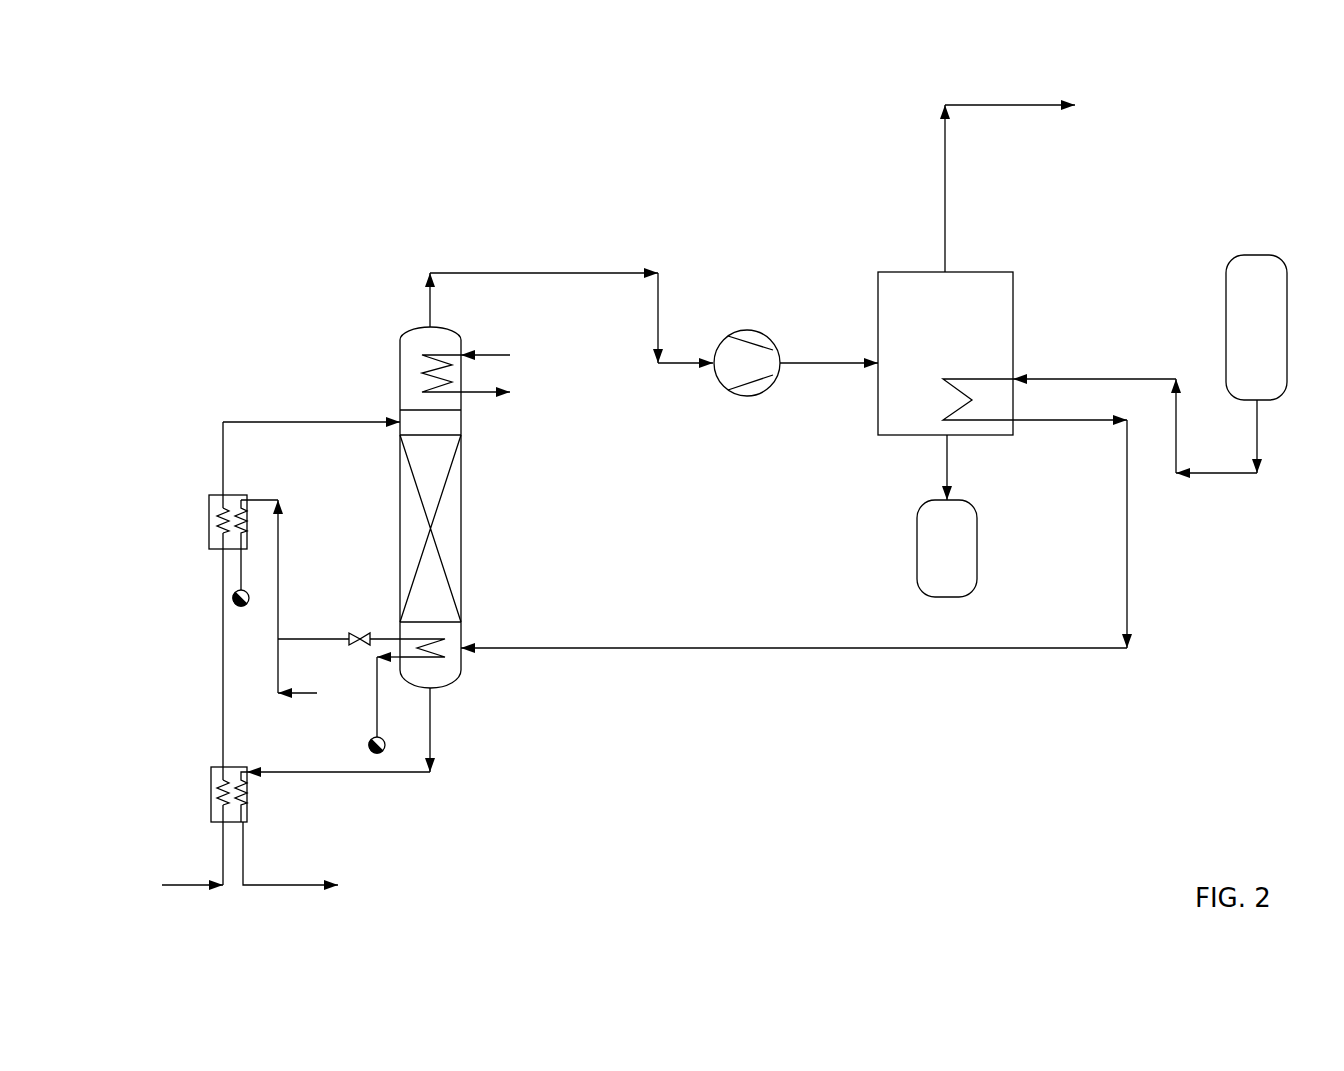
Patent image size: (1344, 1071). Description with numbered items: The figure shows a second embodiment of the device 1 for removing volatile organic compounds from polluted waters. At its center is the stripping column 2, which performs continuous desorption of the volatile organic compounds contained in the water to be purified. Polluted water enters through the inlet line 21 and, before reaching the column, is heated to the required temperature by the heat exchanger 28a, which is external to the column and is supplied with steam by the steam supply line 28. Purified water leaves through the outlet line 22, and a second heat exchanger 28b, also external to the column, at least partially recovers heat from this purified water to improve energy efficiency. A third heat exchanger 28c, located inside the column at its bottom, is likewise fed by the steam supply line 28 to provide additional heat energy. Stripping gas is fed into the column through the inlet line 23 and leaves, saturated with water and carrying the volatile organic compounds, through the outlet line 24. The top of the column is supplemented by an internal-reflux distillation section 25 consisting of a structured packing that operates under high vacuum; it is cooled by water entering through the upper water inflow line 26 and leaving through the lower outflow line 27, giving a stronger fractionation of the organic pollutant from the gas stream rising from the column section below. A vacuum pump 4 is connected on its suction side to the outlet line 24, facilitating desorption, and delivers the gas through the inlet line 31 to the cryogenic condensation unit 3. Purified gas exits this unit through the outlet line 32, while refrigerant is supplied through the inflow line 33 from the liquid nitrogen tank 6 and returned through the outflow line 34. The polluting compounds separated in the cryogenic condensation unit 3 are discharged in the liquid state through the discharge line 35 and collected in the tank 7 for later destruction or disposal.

The device 1 is at (216, 178).
The stripping column 2 is at (468, 501).
The cryogenic condensation unit 3 is at (1020, 303).
The vacuum pump 4 is at (742, 320).
The liquid nitrogen tank 6 is at (1295, 327).
The tank 7 is at (912, 548).
The inlet line 21 is at (237, 417).
The outlet line 22 is at (302, 880).
The inlet line for stripping gas 23 is at (512, 642).
The outlet line for stripping gas 24 is at (524, 267).
The internal-reflux distillation section 25 is at (418, 323).
The upper water inflow line 26 is at (498, 350).
The lower outflow line 27 is at (478, 395).
The steam supply line 28 is at (303, 690).
The heat exchanger 28a is at (237, 490).
The second heat exchanger 28b is at (242, 763).
The third heat exchanger 28c is at (407, 665).
The inlet line for gas to be purified 31 is at (823, 357).
The outlet line for purified gas 32 is at (952, 218).
The inflow line for refrigerant 33 is at (1072, 375).
The outflow line for refrigerant 34 is at (1072, 425).
The discharge line 35 is at (943, 465).